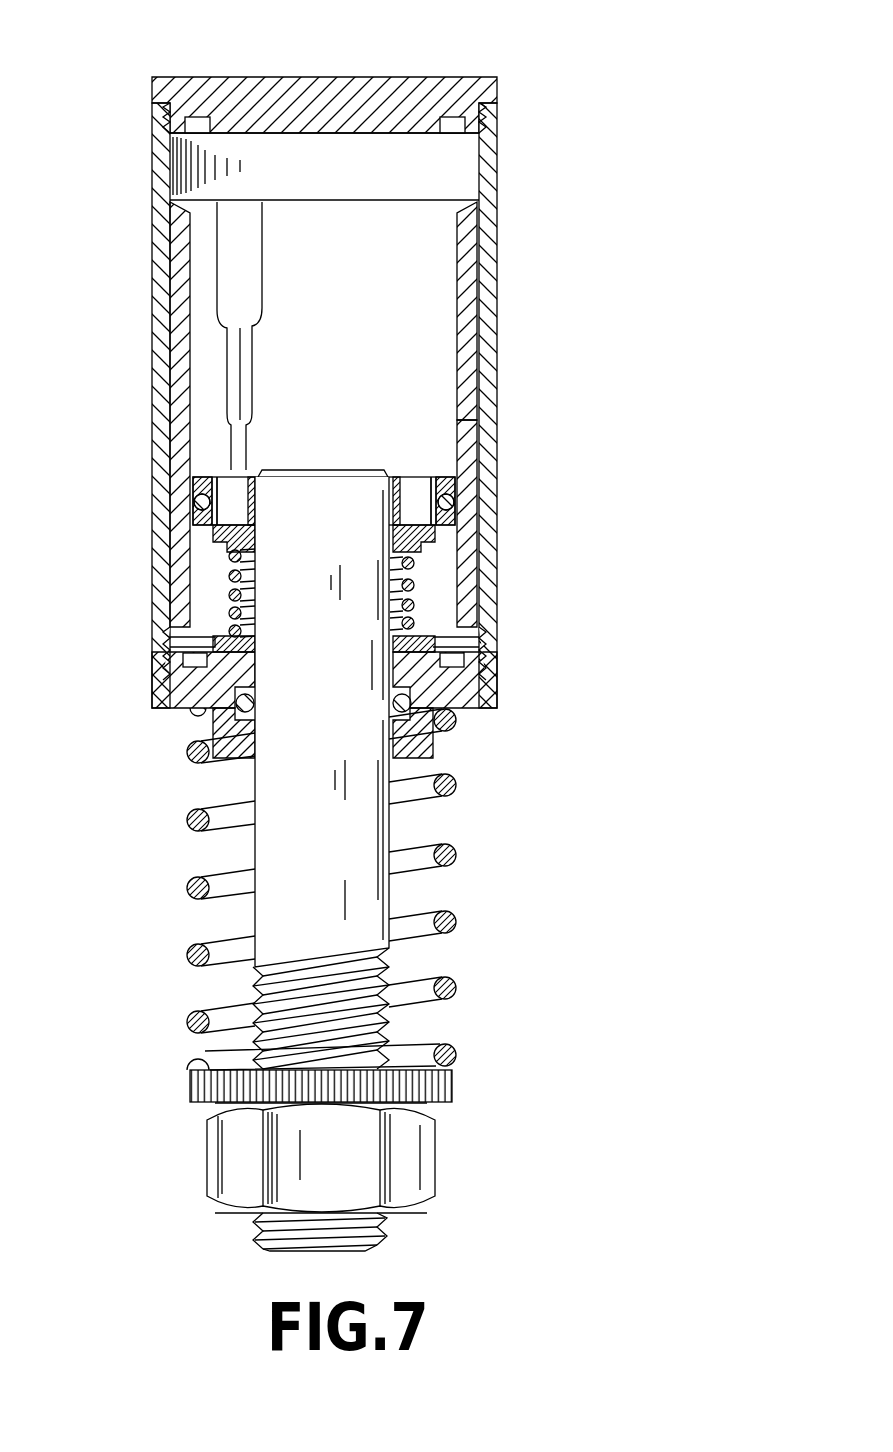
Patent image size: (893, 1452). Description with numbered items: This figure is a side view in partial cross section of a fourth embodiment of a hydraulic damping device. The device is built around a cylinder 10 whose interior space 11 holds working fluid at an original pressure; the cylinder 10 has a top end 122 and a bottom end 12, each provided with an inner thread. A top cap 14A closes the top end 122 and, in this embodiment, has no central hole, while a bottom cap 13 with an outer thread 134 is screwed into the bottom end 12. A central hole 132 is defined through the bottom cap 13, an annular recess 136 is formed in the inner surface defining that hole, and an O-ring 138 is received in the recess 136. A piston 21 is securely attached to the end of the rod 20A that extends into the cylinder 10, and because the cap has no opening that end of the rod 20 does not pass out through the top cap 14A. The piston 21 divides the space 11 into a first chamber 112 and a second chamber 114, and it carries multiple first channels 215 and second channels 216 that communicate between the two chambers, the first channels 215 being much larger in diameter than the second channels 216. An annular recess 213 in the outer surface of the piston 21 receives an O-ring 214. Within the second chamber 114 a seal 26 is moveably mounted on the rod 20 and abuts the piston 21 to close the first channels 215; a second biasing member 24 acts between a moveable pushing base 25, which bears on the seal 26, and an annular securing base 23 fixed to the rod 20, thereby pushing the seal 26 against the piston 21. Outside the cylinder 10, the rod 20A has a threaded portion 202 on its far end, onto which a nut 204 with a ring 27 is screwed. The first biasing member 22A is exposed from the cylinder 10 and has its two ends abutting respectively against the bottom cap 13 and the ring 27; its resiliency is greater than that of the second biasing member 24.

The cylinder 10 is at (497, 275).
The space 11 is at (212, 361).
The first chamber 112 is at (433, 347).
The second chamber 114 is at (438, 601).
The bottom end 12 is at (473, 636).
The top end 122 is at (168, 128).
The bottom cap 13 is at (497, 688).
The central hole 132 is at (378, 740).
The outer thread 134 is at (169, 662).
The annular recess 136 is at (243, 712).
The O-ring 138 is at (212, 722).
The top cap 14A is at (408, 90).
The rod 20 is at (254, 857).
The rod 20A is at (364, 807).
The threaded portion 202 is at (380, 1238).
The nut 204 is at (425, 1168).
The piston 21 is at (444, 474).
The annular recess 213 is at (198, 512).
The O-ring 214 is at (195, 503).
The first channels 215 is at (398, 478).
The second channels 216 is at (440, 478).
The first biasing member 22A is at (456, 918).
The securing base 23 is at (172, 643).
The second biasing member 24 is at (231, 615).
The pushing base 25 is at (432, 536).
The seal 26 is at (442, 517).
The ring 27 is at (453, 1085).